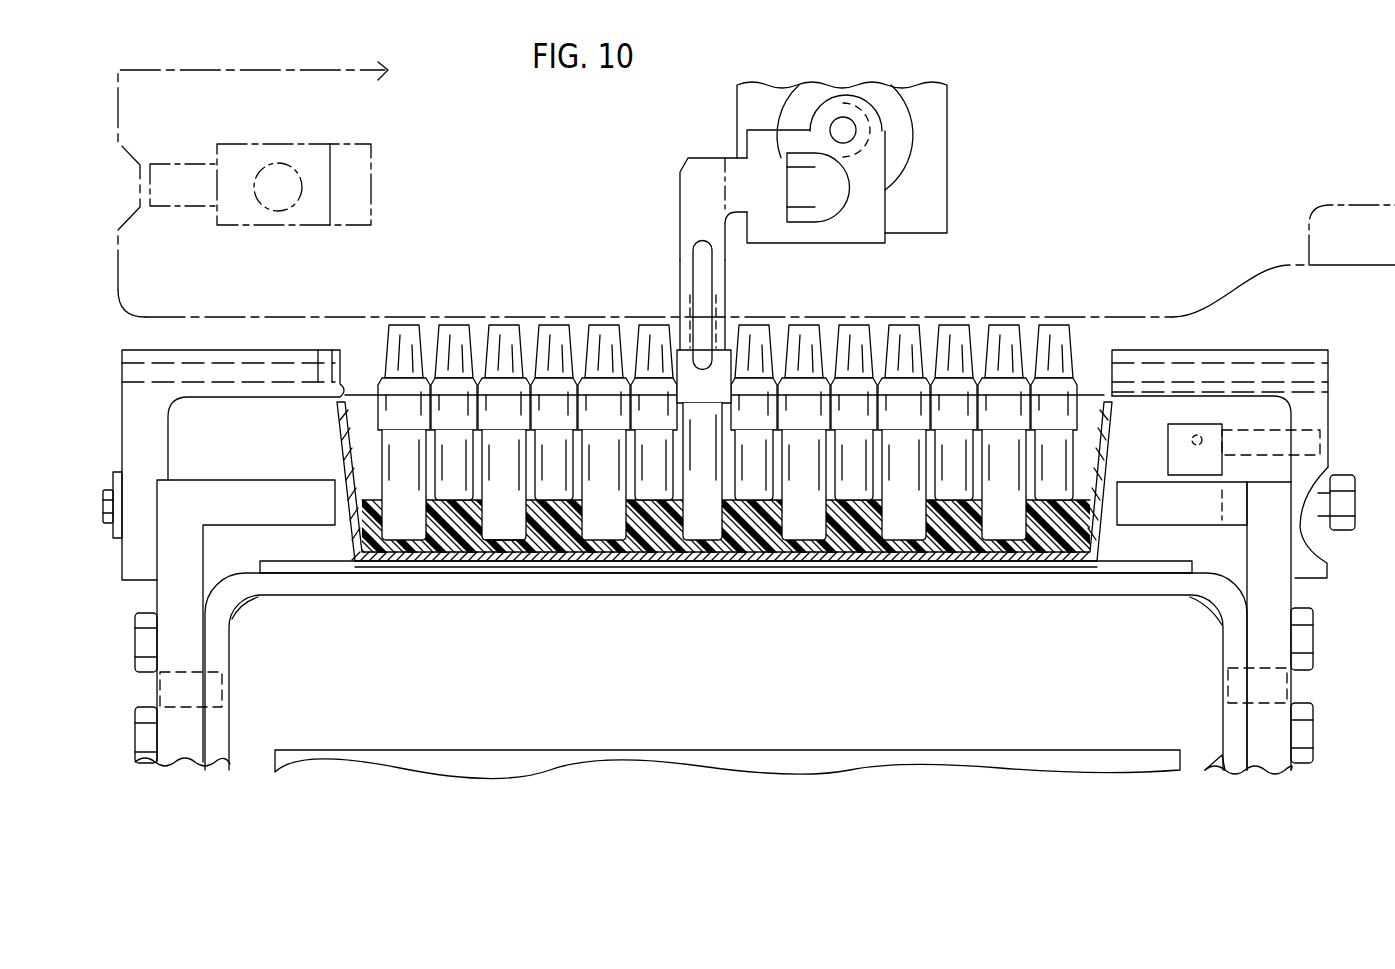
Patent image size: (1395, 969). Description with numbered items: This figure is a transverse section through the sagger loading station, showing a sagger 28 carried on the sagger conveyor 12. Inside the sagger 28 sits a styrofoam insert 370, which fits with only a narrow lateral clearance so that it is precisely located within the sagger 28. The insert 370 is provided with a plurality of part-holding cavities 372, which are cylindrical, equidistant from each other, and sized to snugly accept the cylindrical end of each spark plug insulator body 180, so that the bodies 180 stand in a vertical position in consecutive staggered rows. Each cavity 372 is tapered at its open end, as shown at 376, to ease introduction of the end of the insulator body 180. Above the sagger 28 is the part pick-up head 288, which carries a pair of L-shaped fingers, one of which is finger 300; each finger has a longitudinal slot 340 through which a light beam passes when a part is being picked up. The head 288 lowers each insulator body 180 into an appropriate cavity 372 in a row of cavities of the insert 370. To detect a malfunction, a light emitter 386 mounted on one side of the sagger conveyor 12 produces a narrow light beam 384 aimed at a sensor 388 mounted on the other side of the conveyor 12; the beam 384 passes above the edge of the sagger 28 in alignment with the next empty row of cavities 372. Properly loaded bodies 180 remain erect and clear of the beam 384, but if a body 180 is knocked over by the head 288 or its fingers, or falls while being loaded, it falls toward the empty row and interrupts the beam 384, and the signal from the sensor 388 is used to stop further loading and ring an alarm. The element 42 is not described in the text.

The sagger conveyor 12 is at (382, 574).
The sagger 28 is at (338, 440).
The pivot bracket 42 is at (872, 247).
The spark plug insulator body 180 is at (548, 340).
The part pick-up head 288 is at (680, 192).
The finger 300 is at (680, 256).
The longitudinal slot 340 is at (700, 268).
The styrofoam insert 370 is at (458, 542).
The part-holding cavity 372 is at (509, 534).
The tapered open end 376 is at (705, 532).
The light beam 384 is at (358, 393).
The light emitter 386 is at (347, 388).
The sensor 388 is at (1112, 386).